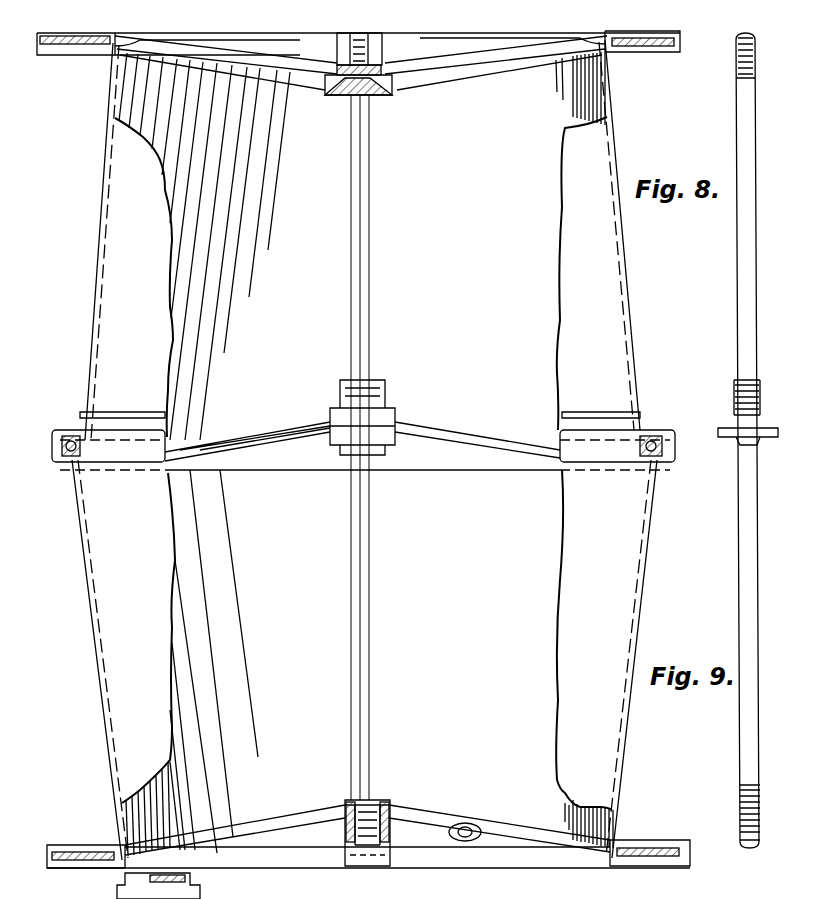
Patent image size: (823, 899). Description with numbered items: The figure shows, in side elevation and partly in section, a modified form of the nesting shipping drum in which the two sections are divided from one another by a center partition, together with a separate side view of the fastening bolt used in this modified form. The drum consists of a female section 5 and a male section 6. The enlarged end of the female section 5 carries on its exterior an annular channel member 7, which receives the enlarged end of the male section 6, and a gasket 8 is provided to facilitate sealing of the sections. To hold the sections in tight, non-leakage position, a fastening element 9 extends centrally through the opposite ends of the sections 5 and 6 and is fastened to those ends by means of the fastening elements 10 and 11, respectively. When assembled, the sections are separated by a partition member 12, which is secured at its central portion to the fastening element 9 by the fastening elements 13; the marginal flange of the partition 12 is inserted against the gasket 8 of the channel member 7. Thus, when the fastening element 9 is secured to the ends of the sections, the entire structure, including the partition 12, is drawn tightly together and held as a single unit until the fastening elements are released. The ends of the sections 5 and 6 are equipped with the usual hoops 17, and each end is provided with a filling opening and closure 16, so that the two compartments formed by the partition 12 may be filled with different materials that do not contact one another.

In FIG. 8, the female section 5 is at (362, 240).
In FIG. 8, the male section 6 is at (364, 660).
In FIG. 8, the annular channel member 7 is at (665, 440).
In FIG. 8, the gasket 8 is at (75, 445).
In FIG. 8, the fastening element 9 is at (380, 585).
In FIG. 9, the fastening element 9 is at (740, 543).
In FIG. 8, the fastening element 10 is at (375, 848).
In FIG. 8, the fastening element 11 is at (385, 60).
In FIG. 8, the partition member 12 is at (585, 445).
In FIG. 8, the fastening elements 13 is at (330, 412).
In FIG. 8, the filling openings and closures 16 is at (470, 841).
In FIG. 8, the hoops 17 is at (80, 55).